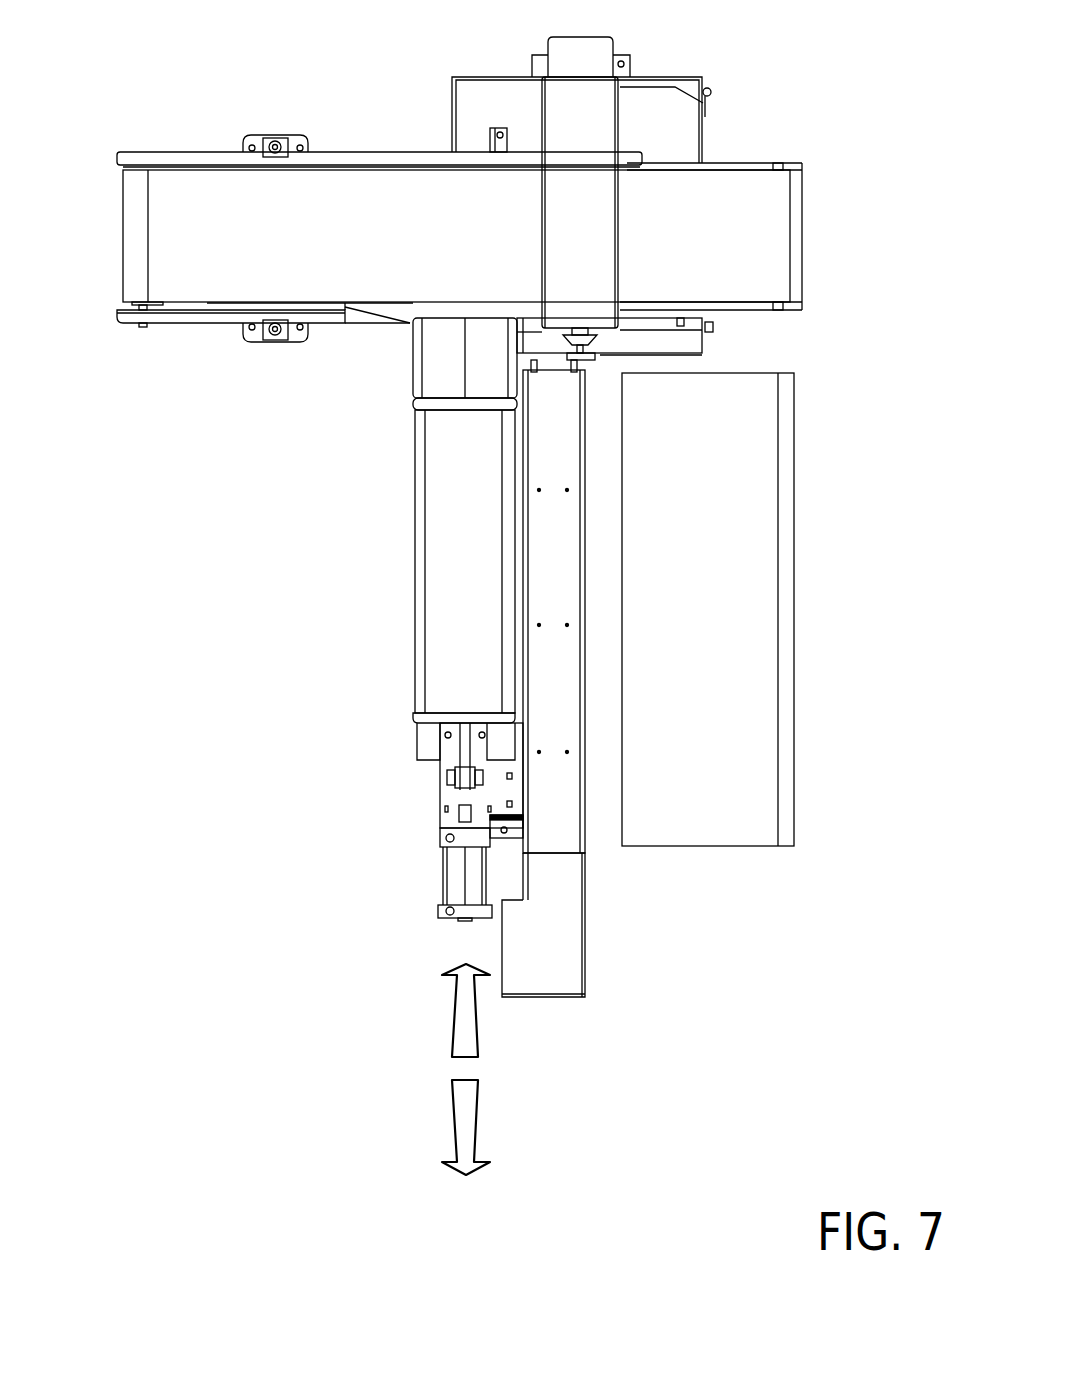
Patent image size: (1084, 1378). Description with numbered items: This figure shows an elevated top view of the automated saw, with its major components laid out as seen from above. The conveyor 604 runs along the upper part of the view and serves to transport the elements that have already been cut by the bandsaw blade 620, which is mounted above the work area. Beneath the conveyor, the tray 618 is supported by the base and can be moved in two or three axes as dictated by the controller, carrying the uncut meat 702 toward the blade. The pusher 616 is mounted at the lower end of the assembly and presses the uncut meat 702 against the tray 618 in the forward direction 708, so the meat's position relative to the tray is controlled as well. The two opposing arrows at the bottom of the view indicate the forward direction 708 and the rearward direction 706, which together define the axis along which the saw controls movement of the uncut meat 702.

The conveyor 604 is at (207, 293).
The tray 618 is at (428, 377).
The bandsaw blade 620 is at (593, 355).
The uncut meat 702 is at (438, 602).
The pusher 616 is at (433, 766).
The forward direction 708 is at (453, 1028).
The rearward direction 706 is at (453, 1137).